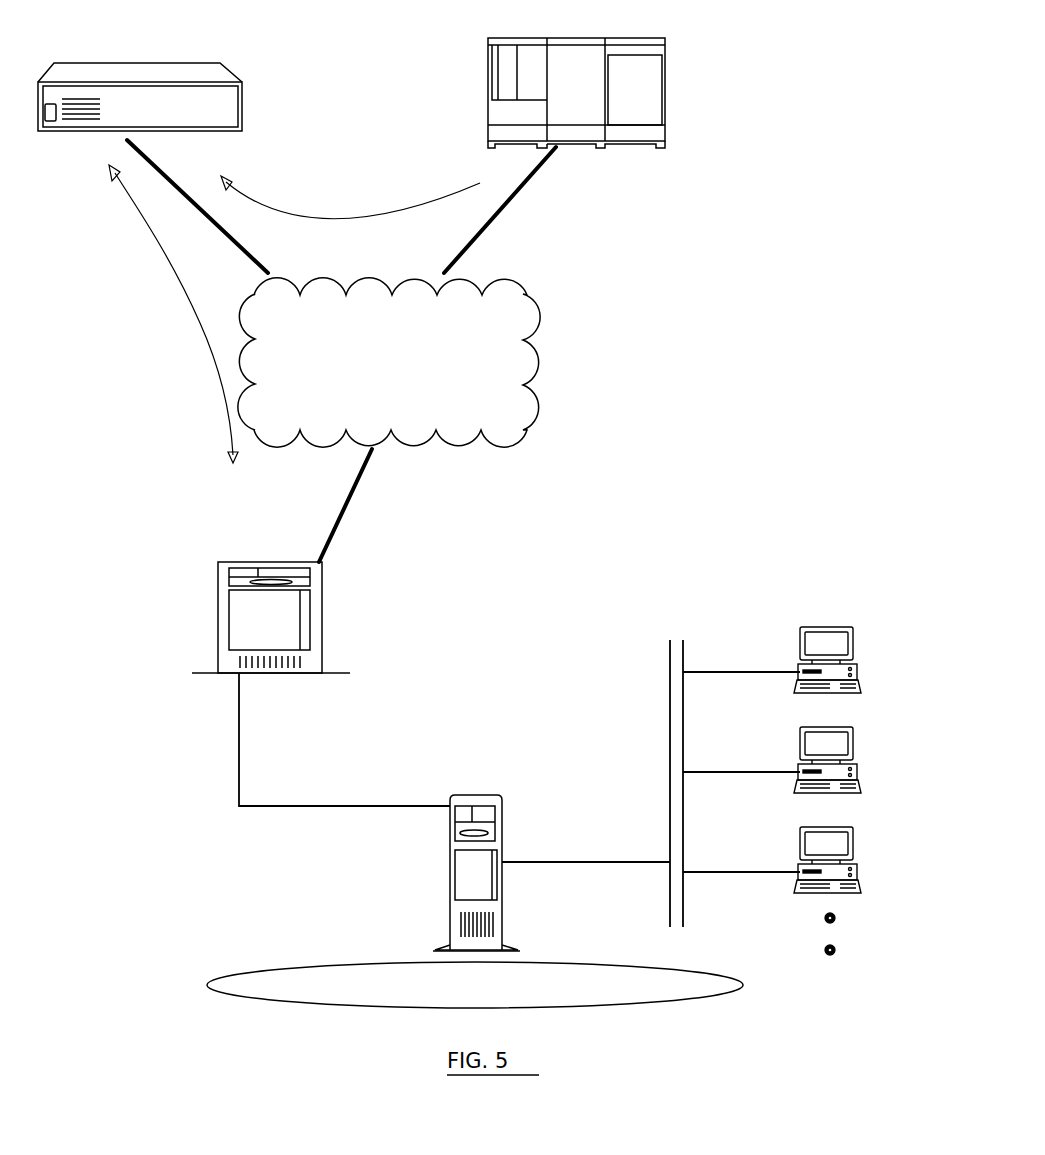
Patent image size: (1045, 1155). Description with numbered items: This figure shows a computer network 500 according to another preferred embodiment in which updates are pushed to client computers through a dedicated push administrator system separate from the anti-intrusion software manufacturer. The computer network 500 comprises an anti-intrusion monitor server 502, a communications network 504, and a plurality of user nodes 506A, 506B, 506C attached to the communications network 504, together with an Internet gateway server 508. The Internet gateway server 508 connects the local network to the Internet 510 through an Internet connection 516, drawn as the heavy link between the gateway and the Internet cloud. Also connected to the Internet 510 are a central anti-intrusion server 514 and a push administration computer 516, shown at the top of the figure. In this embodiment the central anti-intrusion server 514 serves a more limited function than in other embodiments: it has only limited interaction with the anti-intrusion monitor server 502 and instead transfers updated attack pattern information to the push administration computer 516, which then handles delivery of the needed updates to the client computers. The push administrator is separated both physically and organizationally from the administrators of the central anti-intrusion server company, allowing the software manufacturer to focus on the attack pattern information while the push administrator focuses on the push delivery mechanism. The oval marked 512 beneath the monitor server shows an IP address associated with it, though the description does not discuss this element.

The computer network 500 is at (276, 739).
The anti-intrusion monitor server 502 is at (476, 858).
The communications network 504 is at (651, 783).
The user node 506A is at (852, 660).
The user node 506B is at (852, 760).
The user node 506C is at (852, 860).
The Internet gateway server 508 is at (283, 617).
The Internet 510 is at (426, 362).
The IP address 512 is at (475, 1005).
The central anti-intrusion server 514 is at (544, 93).
The push administration computer 516 is at (297, 312).